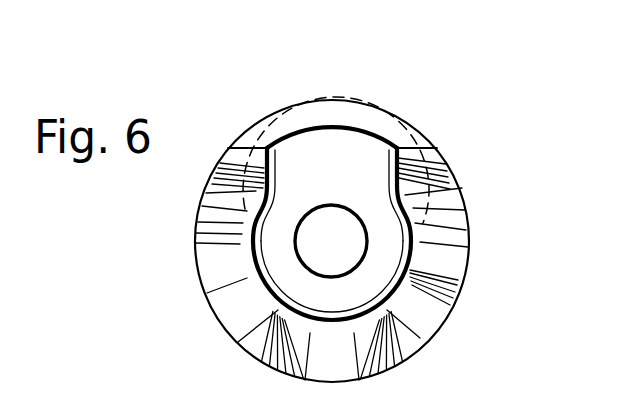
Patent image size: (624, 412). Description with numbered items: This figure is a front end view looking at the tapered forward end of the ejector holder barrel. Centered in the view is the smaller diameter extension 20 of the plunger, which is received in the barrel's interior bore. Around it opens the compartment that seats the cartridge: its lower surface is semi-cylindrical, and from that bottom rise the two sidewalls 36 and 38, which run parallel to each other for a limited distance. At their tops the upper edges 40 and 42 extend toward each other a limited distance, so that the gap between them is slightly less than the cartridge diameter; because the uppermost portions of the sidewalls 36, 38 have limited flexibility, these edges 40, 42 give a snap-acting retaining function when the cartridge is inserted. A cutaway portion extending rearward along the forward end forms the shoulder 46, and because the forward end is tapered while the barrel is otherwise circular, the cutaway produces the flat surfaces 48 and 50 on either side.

The smaller diameter extension 20 is at (322, 248).
The sidewall 36 is at (263, 228).
The sidewall 38 is at (403, 225).
The upper edge 40 is at (263, 147).
The upper edge 42 is at (396, 147).
The shoulder 46 is at (323, 116).
The flat surface 48 is at (237, 147).
The flat surface 50 is at (408, 149).